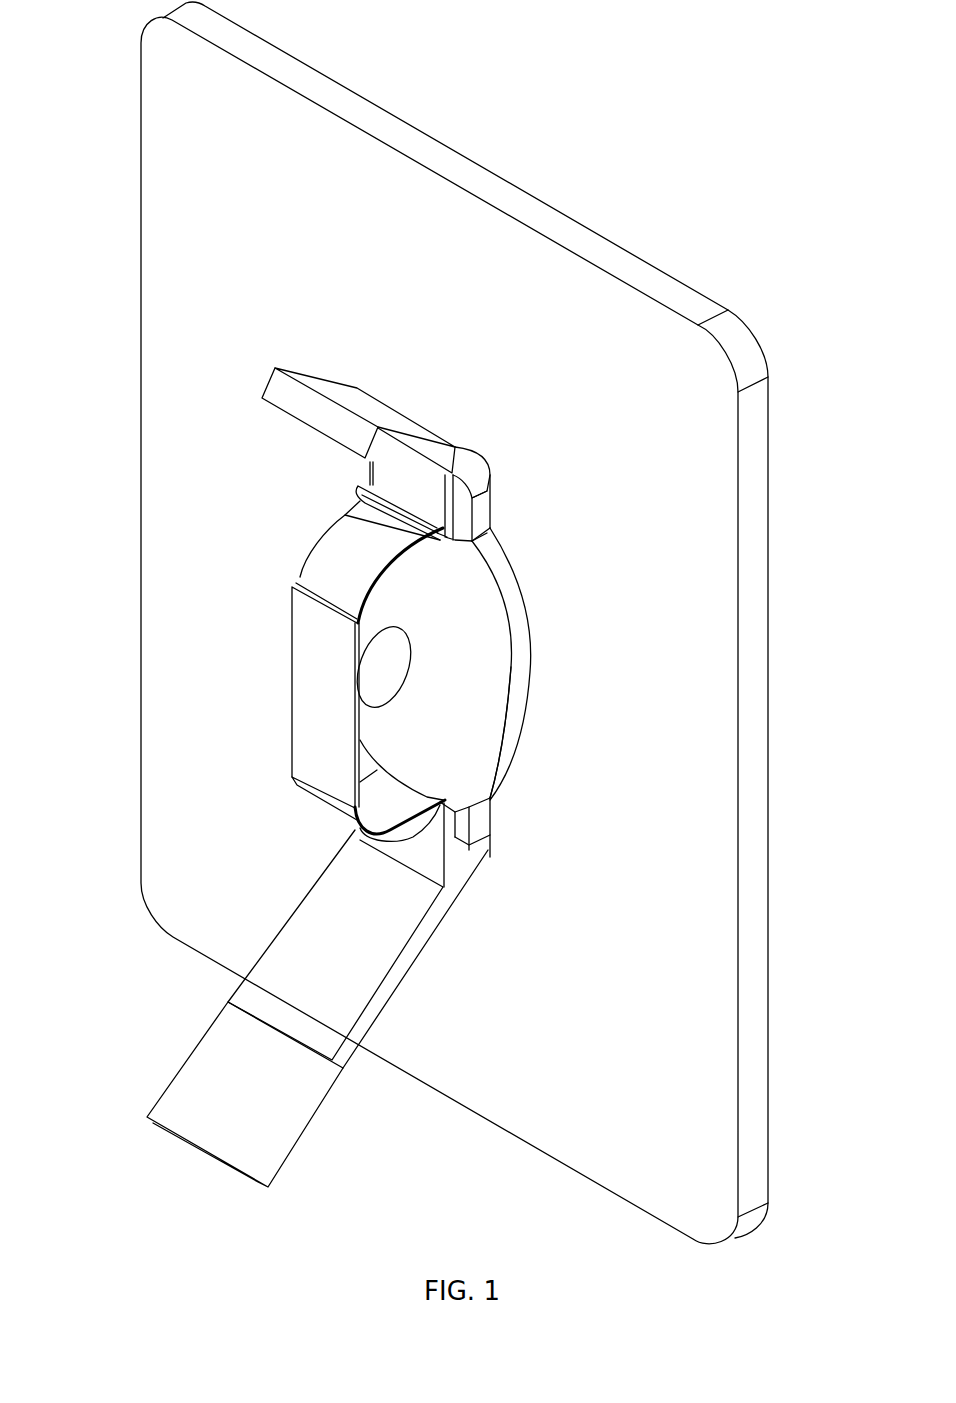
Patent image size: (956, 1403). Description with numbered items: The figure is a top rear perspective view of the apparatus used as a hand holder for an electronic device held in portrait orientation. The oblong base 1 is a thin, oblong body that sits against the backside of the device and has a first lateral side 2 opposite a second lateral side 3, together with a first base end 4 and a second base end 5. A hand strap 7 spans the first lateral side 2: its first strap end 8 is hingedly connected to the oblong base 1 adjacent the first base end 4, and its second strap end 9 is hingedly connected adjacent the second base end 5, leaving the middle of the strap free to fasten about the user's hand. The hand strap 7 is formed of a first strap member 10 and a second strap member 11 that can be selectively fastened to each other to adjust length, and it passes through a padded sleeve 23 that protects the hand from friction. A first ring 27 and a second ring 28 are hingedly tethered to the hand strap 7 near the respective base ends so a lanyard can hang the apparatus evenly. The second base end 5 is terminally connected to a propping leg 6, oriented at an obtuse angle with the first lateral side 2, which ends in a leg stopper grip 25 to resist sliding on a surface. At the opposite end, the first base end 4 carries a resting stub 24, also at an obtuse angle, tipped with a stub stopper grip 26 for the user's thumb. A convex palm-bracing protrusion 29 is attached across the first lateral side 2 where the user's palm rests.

The oblong base 1 is at (584, 675).
The first lateral side 2 is at (447, 502).
The second lateral side 3 is at (523, 590).
The first base end 4 is at (478, 511).
The second base end 5 is at (477, 818).
The propping leg 6 is at (407, 970).
The hand strap 7 is at (233, 607).
The first strap end 8 is at (397, 540).
The second strap end 9 is at (404, 802).
The first strap member 10 is at (322, 553).
The second strap member 11 is at (320, 803).
The padded sleeve 23 is at (295, 702).
The resting stub 24 is at (480, 460).
The leg stopper grip 25 is at (175, 1082).
The stub stopper grip 26 is at (275, 370).
The first ring 27 is at (353, 492).
The second ring 28 is at (380, 855).
The palm-bracing protrusion 29 is at (505, 722).